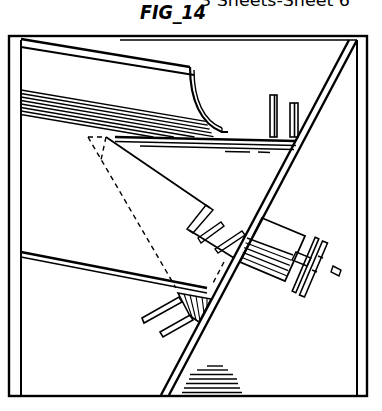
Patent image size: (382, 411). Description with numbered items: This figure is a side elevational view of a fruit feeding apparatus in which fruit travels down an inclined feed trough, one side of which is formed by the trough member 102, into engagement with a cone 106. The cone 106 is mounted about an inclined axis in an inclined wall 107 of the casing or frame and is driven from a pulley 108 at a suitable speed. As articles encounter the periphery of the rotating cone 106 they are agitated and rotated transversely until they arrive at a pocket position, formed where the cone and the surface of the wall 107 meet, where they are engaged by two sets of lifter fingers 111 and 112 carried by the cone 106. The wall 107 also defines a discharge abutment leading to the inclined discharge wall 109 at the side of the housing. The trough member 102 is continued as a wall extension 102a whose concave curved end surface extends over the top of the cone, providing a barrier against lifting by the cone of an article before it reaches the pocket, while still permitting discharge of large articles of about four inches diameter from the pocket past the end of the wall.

The trough member 102 is at (103, 85).
The wall extension 102a is at (205, 114).
The cone 106 is at (229, 181).
The inclined wall 107 is at (281, 185).
The pulley 108 is at (303, 292).
The inclined discharge wall 109 is at (65, 251).
The lifter fingers 111 is at (273, 95).
The lifter fingers 112 is at (293, 103).